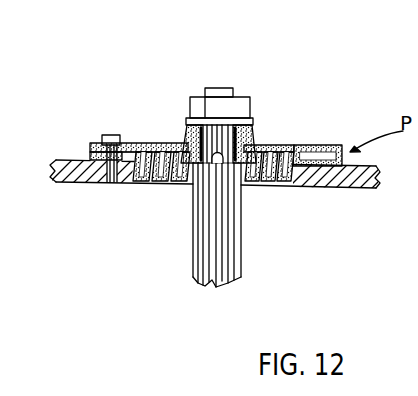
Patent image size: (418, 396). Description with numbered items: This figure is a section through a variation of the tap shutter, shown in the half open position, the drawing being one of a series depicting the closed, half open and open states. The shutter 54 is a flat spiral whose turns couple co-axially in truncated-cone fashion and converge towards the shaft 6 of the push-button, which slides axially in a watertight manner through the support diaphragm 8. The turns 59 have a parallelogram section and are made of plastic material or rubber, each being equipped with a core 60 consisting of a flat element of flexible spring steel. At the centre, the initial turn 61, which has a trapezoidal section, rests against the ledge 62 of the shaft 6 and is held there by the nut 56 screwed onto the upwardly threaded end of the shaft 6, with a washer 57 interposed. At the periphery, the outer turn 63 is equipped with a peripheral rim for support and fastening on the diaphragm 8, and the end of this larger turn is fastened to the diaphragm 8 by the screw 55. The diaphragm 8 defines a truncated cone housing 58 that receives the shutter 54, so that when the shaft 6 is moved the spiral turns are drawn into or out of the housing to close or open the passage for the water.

The shaft 6 is at (207, 265).
The support diaphragm 8 is at (64, 184).
The shutter 54 is at (240, 151).
The screw 55 is at (106, 134).
The nut 56 is at (242, 107).
The washer 57 is at (189, 112).
The truncated cone housing 58 is at (287, 186).
The turns 59 is at (222, 151).
The core 60 is at (148, 184).
The initial turn 61 is at (187, 124).
The ledge 62 is at (222, 166).
The outer turn 63 is at (314, 146).